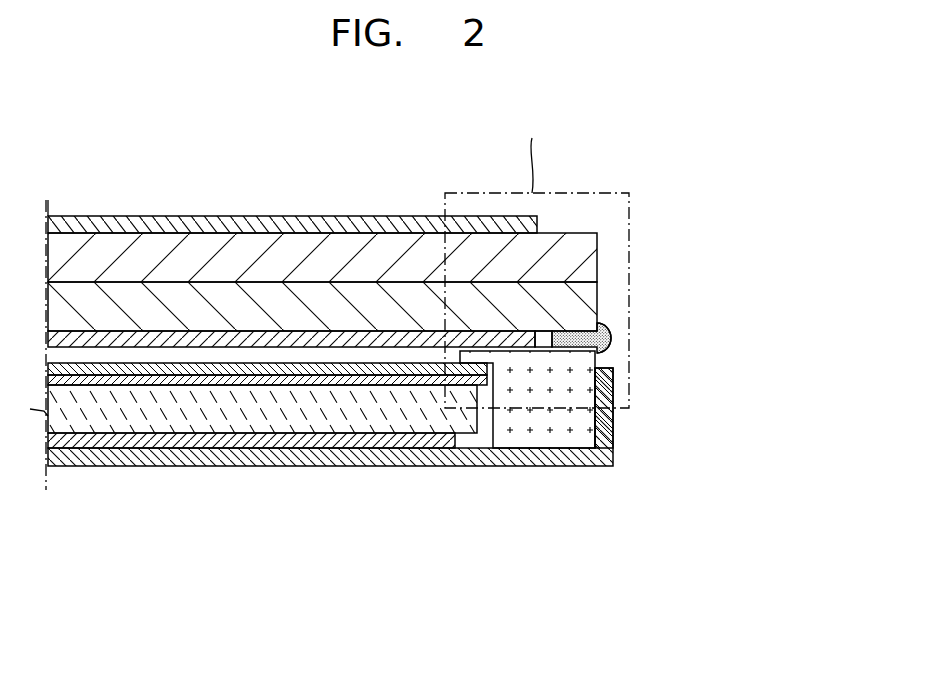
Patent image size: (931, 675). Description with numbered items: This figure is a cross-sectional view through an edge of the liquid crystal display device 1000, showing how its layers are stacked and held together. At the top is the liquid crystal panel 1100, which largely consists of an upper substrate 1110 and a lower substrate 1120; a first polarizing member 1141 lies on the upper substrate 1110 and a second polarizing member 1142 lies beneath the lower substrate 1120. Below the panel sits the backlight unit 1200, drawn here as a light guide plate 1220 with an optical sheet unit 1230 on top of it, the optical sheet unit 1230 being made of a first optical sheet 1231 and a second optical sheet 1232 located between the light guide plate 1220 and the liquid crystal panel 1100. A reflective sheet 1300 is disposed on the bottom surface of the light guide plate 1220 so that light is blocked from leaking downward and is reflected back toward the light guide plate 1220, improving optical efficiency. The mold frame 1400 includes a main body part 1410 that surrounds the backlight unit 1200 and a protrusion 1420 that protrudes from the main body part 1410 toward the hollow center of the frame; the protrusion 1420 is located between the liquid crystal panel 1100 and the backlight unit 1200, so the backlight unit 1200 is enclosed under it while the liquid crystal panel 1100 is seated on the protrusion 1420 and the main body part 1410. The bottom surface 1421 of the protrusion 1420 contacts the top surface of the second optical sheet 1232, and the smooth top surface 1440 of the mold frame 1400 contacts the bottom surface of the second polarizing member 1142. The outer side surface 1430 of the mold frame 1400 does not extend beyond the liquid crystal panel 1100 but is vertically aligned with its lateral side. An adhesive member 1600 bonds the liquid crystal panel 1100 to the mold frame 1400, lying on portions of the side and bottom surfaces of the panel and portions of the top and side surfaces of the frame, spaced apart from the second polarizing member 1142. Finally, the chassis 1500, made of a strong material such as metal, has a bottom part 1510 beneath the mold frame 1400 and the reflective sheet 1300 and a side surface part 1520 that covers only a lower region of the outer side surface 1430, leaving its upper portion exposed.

The liquid crystal display device 1000 is at (650, 116).
The liquid crystal panel 1100 is at (725, 227).
The upper substrate 1110 is at (590, 258).
The lower substrate 1120 is at (590, 300).
The first polarizing member 1141 is at (540, 230).
The second polarizing member 1142 is at (135, 335).
The backlight unit 1200 is at (332, 592).
The light guide plate 1220 is at (328, 415).
The optical sheet unit 1230 is at (260, 552).
The first optical sheet 1231 is at (238, 380).
The second optical sheet 1232 is at (200, 368).
The reflective sheet 1300 is at (385, 440).
The mold frame 1400 is at (725, 325).
The main body part 1410 is at (540, 390).
The protrusion 1420 is at (493, 367).
The bottom surface of the protrusion 1421 is at (493, 388).
The outer side surface 1430 is at (600, 369).
The smooth top surface 1440 is at (608, 338).
The chassis 1500 is at (628, 554).
The bottom part 1510 is at (535, 466).
The side surface part 1520 is at (613, 447).
The adhesive member 1600 is at (610, 326).